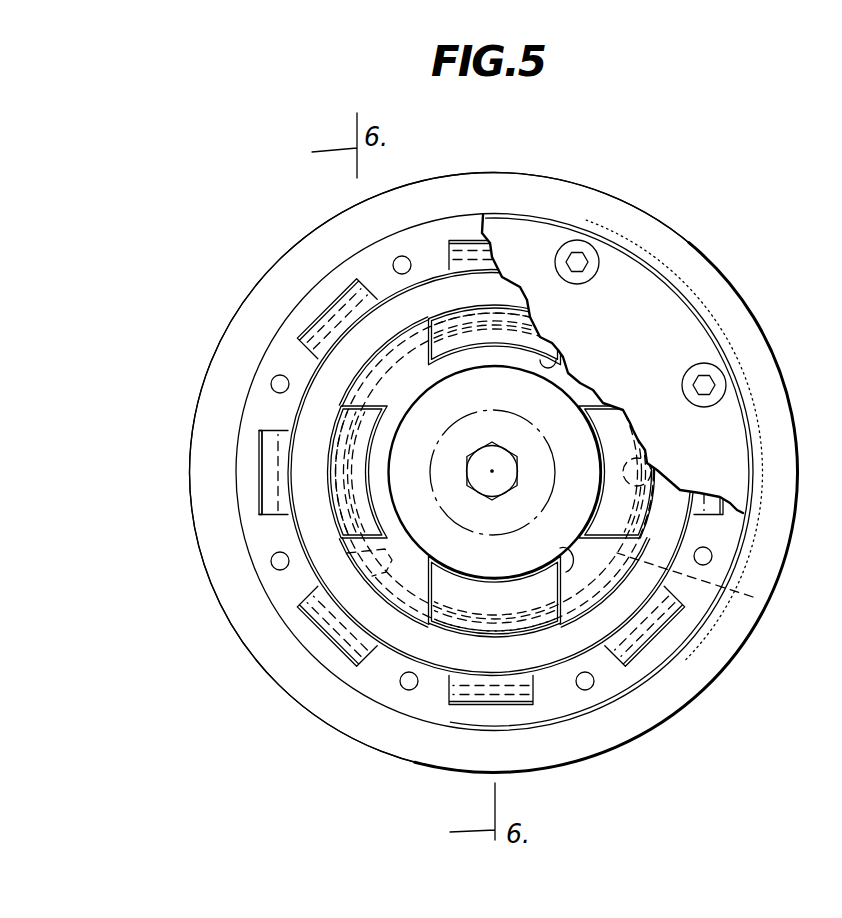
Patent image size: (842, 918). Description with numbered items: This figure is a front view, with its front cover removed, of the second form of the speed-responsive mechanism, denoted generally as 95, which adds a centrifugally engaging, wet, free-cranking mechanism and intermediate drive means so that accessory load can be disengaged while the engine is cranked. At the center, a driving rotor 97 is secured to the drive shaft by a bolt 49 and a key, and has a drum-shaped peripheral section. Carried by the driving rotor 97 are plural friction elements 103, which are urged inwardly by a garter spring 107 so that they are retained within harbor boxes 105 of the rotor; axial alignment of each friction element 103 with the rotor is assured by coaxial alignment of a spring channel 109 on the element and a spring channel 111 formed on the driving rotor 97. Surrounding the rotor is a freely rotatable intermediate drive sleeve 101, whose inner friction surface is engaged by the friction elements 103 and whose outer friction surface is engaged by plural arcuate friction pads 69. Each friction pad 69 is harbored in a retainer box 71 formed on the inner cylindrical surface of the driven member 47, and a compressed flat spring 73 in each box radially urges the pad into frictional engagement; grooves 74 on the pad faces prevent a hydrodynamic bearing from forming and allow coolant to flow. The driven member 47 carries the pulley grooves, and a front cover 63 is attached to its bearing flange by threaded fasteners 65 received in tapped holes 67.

The driven member 47 is at (312, 248).
The bolt 49 is at (474, 452).
The front cover 63 is at (688, 292).
The threaded fasteners 65 is at (712, 370).
The tapped holes 67 is at (590, 688).
The friction pads 69 is at (275, 468).
The retainer box 71 is at (268, 515).
The flat spring 73 is at (322, 312).
The grooves 74 is at (647, 622).
The second form of the speed-responsive mechanism 95 is at (717, 183).
The driving rotor 97 is at (410, 385).
The intermediate drive sleeve 101 is at (312, 418).
The friction elements 103 is at (643, 513).
The harbor boxes 105 is at (568, 580).
The garter spring 107 is at (764, 603).
The spring channel 109 is at (637, 452).
The spring channel 111 is at (387, 552).